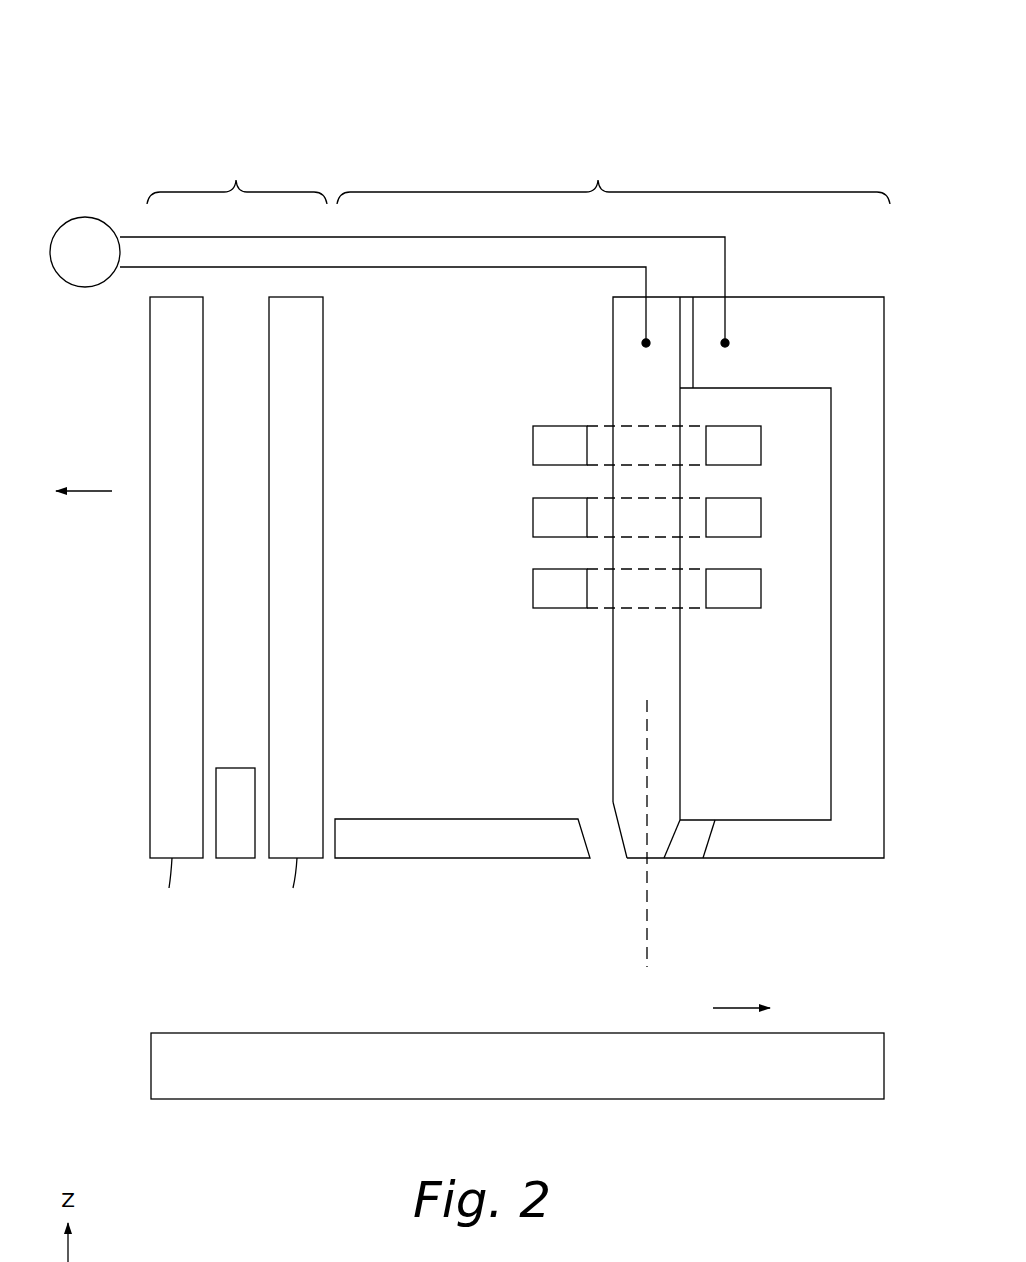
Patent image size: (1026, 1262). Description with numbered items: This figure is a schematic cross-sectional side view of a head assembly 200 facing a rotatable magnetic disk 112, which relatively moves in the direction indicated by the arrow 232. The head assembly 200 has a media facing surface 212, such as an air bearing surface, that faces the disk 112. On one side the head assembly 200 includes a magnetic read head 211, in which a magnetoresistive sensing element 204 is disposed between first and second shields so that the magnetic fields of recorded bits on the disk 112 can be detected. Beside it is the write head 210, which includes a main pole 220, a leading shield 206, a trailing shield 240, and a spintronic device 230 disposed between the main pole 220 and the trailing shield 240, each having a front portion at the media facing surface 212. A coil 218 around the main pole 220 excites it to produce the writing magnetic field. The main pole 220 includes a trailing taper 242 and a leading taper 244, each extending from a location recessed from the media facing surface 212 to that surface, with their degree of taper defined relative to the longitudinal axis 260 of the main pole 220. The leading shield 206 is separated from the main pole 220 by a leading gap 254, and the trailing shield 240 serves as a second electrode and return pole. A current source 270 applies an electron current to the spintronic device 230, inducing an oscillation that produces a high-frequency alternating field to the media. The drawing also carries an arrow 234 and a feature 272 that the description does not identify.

The head assembly 200 is at (146, 42).
The current source 270 is at (85, 217).
The magnetic read head 211 is at (237, 178).
The write head 210 is at (613, 178).
The electrical lead 272 is at (685, 303).
The down-track direction arrow 234 is at (91, 491).
The coil 218 is at (560, 608).
The main pole 220 is at (663, 663).
The leading taper 244 is at (620, 832).
The trailing taper 242 is at (677, 832).
The leading gap 254 is at (607, 855).
The spintronic device 230 is at (683, 847).
The media facing surface 212 is at (764, 858).
The trailing shield 240 is at (853, 843).
The longitudinal axis 260 is at (647, 952).
The arrow 232 is at (730, 1007).
The sensing element 204 is at (232, 858).
The leading shield 206 is at (390, 858).
The rotatable magnetic disk 112 is at (150, 1060).